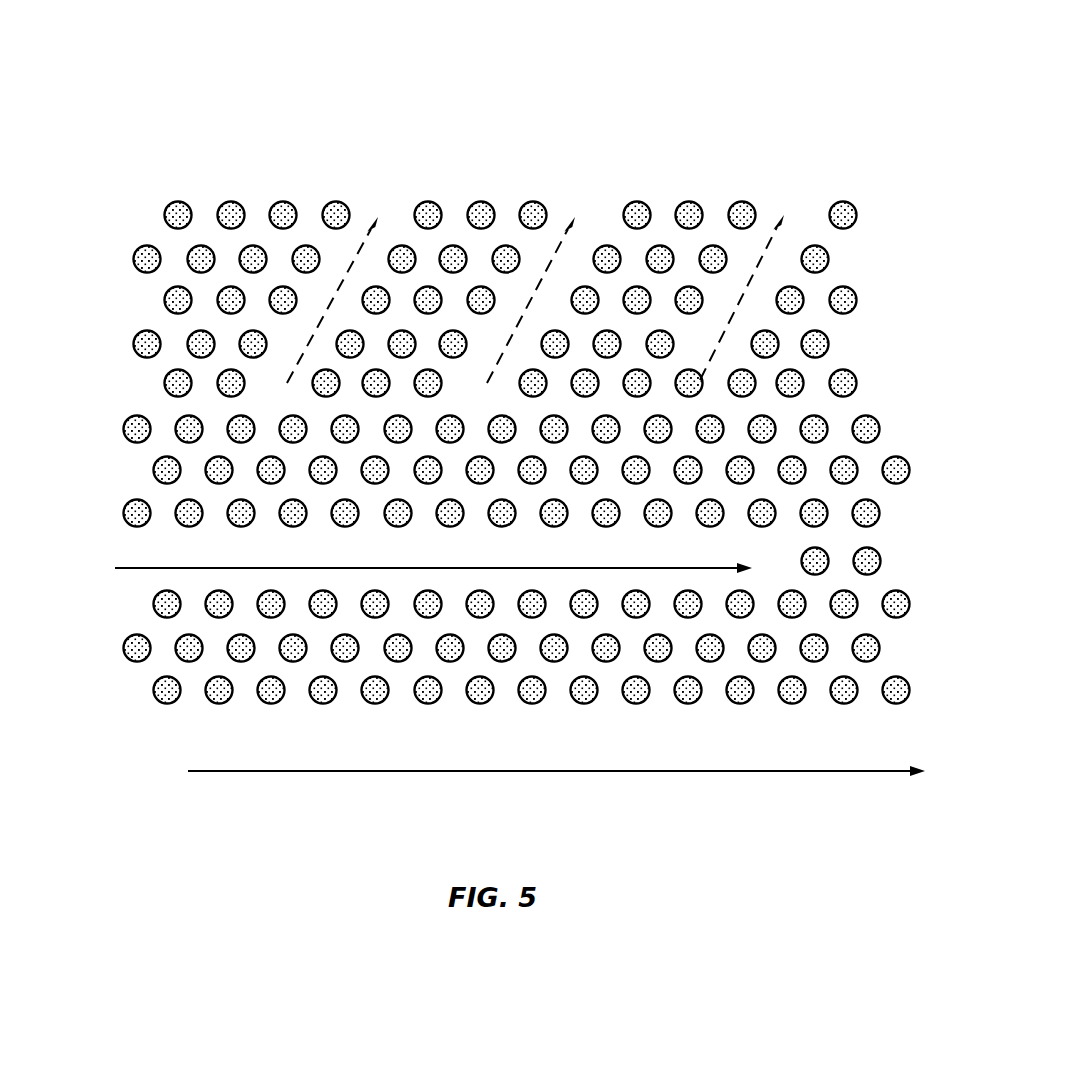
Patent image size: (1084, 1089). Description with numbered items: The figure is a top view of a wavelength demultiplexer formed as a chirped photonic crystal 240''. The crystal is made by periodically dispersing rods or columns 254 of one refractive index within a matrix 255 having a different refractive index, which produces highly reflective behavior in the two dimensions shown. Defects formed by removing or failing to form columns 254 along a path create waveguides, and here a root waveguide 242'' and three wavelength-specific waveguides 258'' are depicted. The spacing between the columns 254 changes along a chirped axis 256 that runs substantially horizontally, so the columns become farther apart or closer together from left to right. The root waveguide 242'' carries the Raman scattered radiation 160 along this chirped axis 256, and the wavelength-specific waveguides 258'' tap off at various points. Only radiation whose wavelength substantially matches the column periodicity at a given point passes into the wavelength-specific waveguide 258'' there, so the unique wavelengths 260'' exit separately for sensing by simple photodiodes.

The chirped photonic crystal 240'' is at (481, 356).
The rods or columns 254 is at (186, 257).
The matrix 255 is at (178, 333).
The wavelength-specific waveguides 258'' is at (623, 268).
The unique wavelengths 260'' is at (589, 130).
The root waveguide 242'' is at (481, 559).
The Raman scattered radiation 160 is at (163, 568).
The chirped axis 256 is at (334, 772).